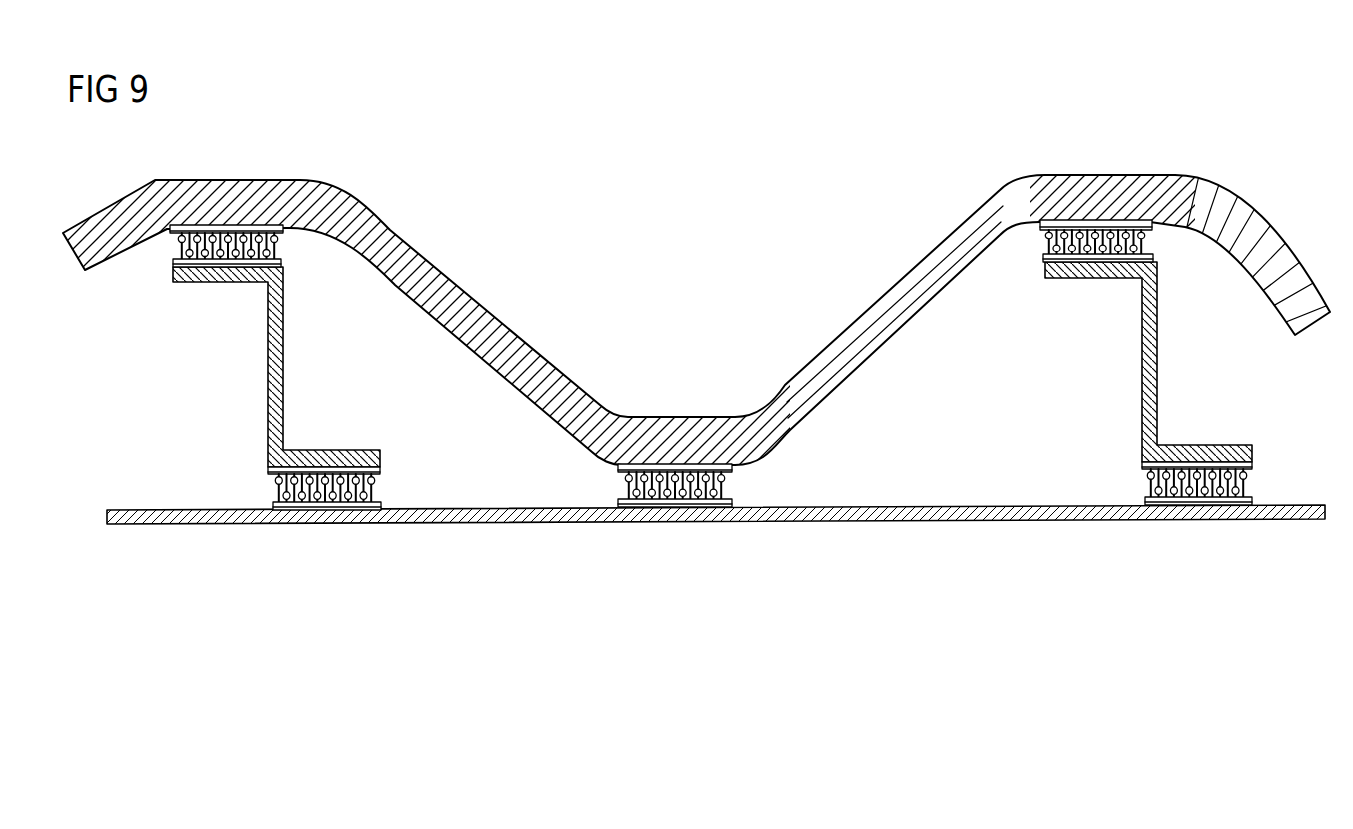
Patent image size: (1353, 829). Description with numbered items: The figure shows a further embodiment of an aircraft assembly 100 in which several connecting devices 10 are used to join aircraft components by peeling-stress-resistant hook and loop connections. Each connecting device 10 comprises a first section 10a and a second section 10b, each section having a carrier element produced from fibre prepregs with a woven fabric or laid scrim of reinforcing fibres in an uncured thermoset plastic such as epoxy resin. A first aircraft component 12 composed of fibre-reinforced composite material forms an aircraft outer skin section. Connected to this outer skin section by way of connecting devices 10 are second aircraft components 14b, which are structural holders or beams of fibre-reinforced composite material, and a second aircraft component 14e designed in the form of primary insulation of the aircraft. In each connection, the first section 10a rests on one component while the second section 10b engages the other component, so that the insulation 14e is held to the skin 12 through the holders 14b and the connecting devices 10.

The electronic assembly 100 is at (1232, 96).
The connecting device 10 is at (711, 321).
The first section 10a is at (281, 263).
The second section 10b is at (229, 230).
The first aircraft component 12 is at (948, 518).
The second aircraft component 14b is at (279, 327).
The second aircraft component 14e is at (1230, 210).